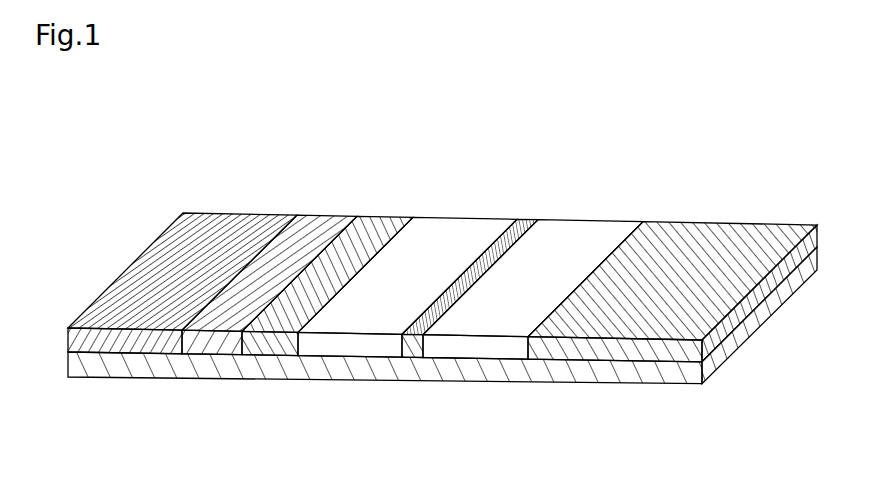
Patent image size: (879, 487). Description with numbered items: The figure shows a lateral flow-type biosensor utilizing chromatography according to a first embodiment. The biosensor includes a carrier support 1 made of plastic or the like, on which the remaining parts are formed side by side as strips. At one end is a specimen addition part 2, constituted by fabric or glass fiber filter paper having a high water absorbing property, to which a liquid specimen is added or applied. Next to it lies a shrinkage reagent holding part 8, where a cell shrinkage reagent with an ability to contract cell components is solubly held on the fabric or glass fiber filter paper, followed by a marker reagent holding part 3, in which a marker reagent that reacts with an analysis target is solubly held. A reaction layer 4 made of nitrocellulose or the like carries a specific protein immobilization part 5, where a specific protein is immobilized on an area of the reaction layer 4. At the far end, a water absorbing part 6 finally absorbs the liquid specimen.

The carrier support 1 is at (630, 375).
The specimen addition part 2 is at (213, 218).
The marker reagent holding part 3 is at (367, 220).
The reaction layer 4 is at (438, 223).
The specific protein immobilization part 5 is at (527, 220).
The water absorbing part 6 is at (730, 230).
The shrinkage reagent holding part 8 is at (313, 220).